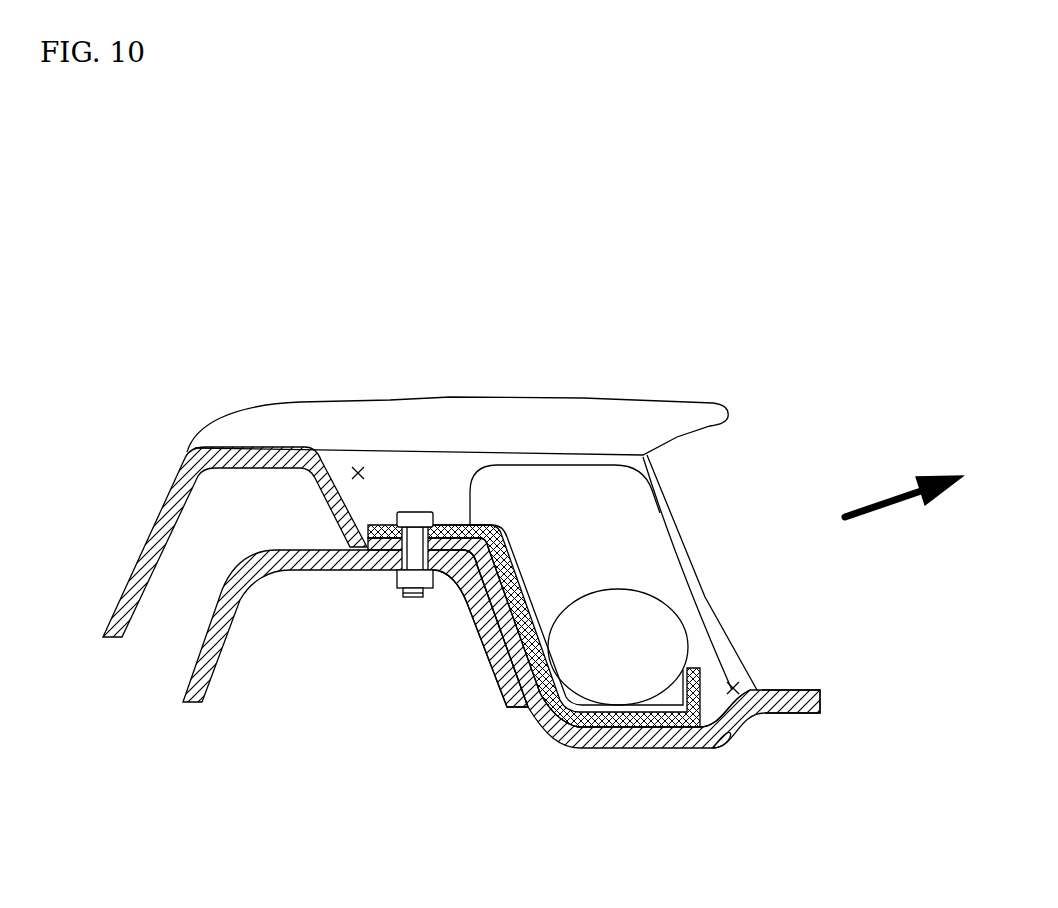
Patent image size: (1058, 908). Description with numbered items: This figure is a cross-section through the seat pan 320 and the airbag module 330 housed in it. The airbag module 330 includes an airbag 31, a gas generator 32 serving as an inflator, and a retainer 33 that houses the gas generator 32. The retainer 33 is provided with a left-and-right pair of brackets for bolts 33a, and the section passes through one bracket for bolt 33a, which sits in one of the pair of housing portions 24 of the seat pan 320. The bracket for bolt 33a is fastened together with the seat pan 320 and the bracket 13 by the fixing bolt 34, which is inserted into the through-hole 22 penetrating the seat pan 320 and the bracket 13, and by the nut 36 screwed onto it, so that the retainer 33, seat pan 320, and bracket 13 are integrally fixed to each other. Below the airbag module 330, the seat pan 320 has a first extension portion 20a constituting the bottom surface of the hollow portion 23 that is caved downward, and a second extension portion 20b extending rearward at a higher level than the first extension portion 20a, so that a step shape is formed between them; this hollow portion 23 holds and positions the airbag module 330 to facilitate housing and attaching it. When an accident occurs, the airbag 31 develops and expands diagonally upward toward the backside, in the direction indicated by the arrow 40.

The bracket 13 is at (227, 645).
The first extension portion 20a is at (630, 750).
The second extension portion 20b is at (795, 714).
The through-hole 22 is at (395, 575).
The hollow portion 23 is at (734, 696).
The housing portion 24 is at (355, 468).
The airbag 31 is at (617, 545).
The gas generator 32 is at (628, 647).
The retainer 33 is at (664, 722).
The bracket for bolt 33a is at (445, 525).
The fixing bolt 34 is at (405, 507).
The nut 36 is at (428, 592).
The arrow 40 is at (904, 488).
The seat pan 320 is at (157, 513).
The airbag module 330 is at (654, 507).